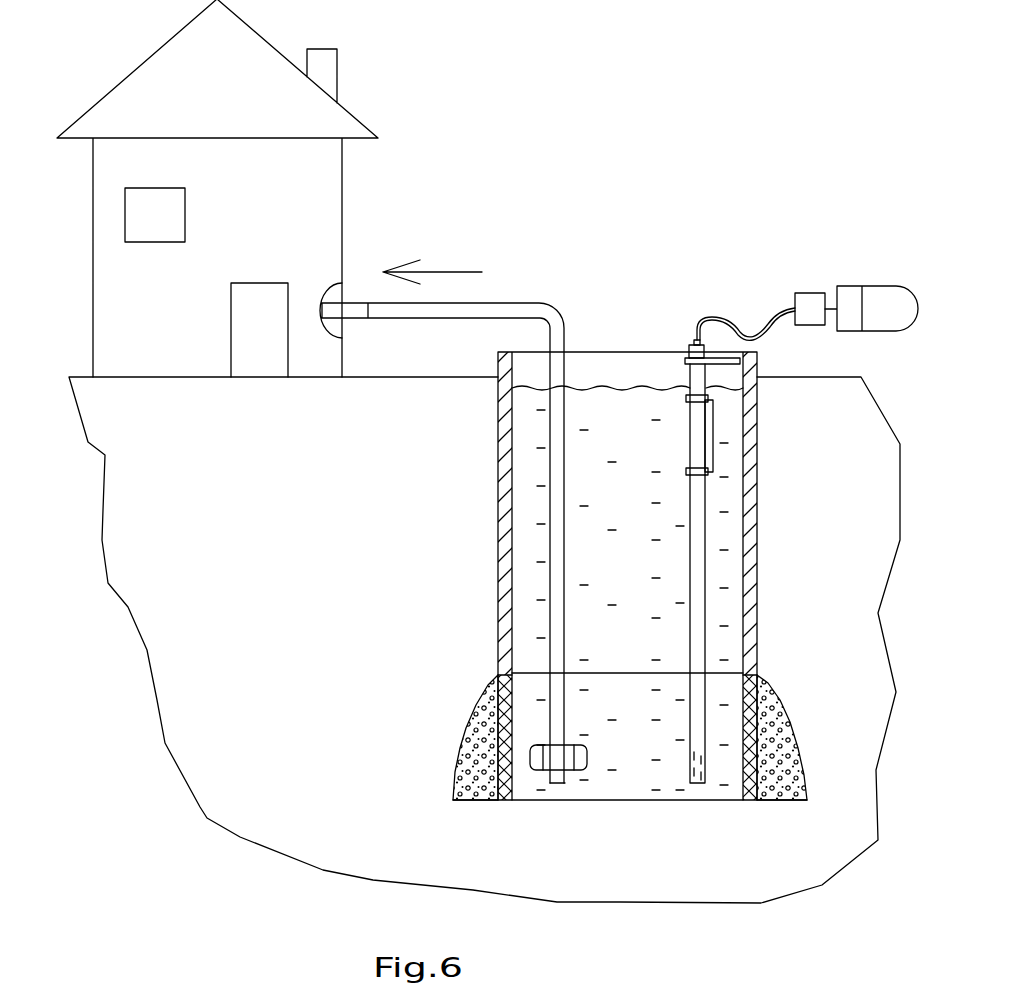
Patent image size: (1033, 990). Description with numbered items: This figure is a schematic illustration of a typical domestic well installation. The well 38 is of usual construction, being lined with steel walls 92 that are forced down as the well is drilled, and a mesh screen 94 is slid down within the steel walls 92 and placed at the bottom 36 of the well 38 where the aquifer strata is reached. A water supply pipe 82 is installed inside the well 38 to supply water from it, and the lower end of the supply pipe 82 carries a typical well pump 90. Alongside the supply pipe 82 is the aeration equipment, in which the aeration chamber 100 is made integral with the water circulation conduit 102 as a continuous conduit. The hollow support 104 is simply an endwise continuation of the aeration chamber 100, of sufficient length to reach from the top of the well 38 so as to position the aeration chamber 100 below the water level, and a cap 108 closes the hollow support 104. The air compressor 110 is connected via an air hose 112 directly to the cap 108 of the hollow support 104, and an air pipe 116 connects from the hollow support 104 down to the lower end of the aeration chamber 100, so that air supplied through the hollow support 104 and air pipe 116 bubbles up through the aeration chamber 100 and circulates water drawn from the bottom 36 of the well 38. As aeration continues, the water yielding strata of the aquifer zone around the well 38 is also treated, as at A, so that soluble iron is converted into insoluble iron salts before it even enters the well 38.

The bottom 36 is at (697, 802).
The well 38 is at (537, 622).
The water supply pipe 82 is at (560, 542).
The well pump 90 is at (543, 772).
The steel walls 92 is at (754, 537).
The mesh screen 94 is at (747, 777).
The aeration chamber 100 is at (693, 440).
The water circulation conduit 102 is at (698, 611).
The hollow support 104 is at (687, 385).
The cap 108 is at (740, 365).
The air compressor 110 is at (807, 293).
The air hose 112 is at (719, 315).
The air pipe 116 is at (713, 447).
The water yielding strata of the aquifer zone A is at (475, 712).